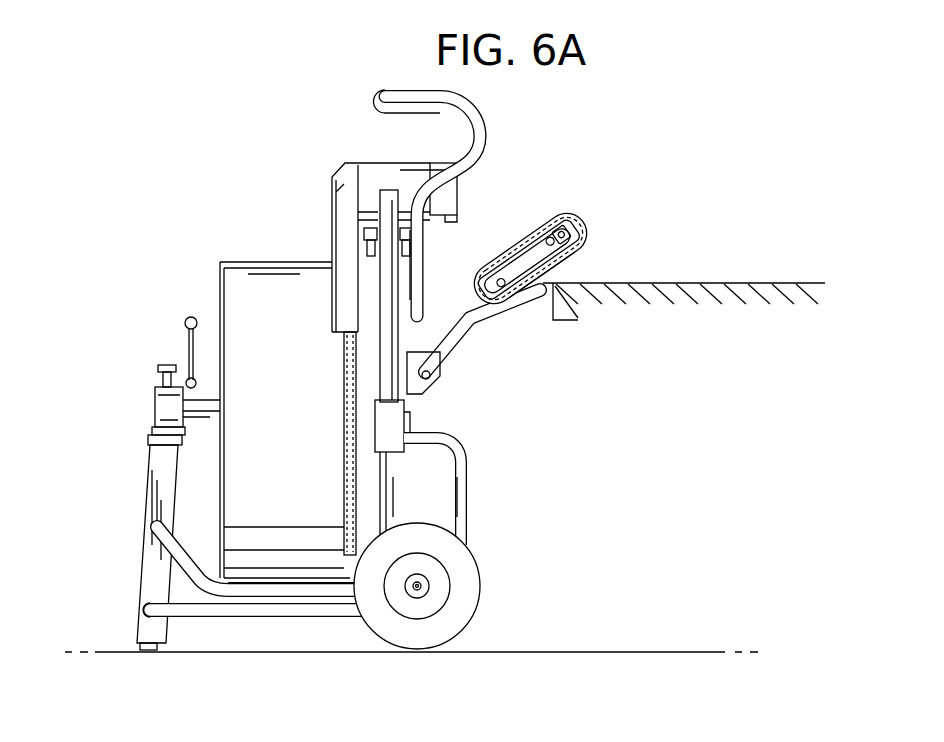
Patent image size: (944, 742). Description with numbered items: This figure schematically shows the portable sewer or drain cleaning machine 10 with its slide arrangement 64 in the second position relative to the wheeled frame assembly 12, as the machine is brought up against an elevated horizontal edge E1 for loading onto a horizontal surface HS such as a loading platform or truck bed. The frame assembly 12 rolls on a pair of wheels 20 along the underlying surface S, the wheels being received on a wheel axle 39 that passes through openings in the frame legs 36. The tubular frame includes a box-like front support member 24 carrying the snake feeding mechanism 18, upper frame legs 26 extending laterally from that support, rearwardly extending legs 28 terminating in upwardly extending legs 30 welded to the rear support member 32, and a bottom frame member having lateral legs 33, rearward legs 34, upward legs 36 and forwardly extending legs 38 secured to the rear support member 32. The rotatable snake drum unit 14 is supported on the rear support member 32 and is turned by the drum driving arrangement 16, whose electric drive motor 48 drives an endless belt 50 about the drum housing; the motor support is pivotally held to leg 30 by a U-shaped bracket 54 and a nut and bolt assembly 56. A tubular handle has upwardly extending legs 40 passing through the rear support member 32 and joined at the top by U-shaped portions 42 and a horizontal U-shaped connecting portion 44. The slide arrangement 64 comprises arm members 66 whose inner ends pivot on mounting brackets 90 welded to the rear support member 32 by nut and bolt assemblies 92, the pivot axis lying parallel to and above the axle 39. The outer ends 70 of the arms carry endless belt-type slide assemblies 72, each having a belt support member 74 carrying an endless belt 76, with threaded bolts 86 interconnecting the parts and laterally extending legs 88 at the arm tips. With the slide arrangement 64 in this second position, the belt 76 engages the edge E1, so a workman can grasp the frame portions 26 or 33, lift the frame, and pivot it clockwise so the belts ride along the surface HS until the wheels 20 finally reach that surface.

The portable sewer or drain cleaning machine 10 is at (193, 198).
The wheeled frame assembly 12 is at (131, 550).
The rotatable snake drum unit 14 is at (253, 262).
The drum driving arrangement 16 is at (347, 158).
The snake feeding mechanism 18 is at (158, 398).
The wheels 20 is at (468, 598).
The front support member 24 is at (157, 467).
The legs of upper frame member 26 is at (153, 521).
The rearwardly extending legs 28 is at (250, 586).
The upwardly extending legs 30 is at (387, 192).
The rear support member 32 is at (400, 446).
The legs of bottom frame member 33 is at (146, 608).
The rearwardly extending bottom legs 34 is at (278, 608).
The upwardly extending bottom frame legs 36 is at (456, 510).
The forwardly extending legs 38 is at (406, 418).
The wheel axle 39 is at (416, 590).
The handle legs 40 is at (427, 267).
The U-shaped handle portions 42 is at (478, 130).
The horizontal U-shaped connecting portion 44 is at (382, 92).
The electric drive motor 48 is at (448, 197).
The endless belt 50 is at (343, 362).
The U-shaped bracket 54 is at (377, 266).
The nut and bolt assembly 56 is at (376, 250).
The slide arrangement 64 is at (614, 210).
The arm members 66 is at (454, 346).
The outer ends of arm members 70 is at (545, 240).
The endless belt-type slide assemblies 72 is at (604, 240).
The belt support members 74 is at (521, 306).
The endless belts 76 is at (512, 312).
The threaded bolts 86 is at (566, 230).
The laterally outwardly extending legs 88 is at (606, 216).
The mounting brackets 90 is at (443, 385).
The nut and bolt assemblies 92 is at (405, 372).
The horizontal surface HS is at (745, 283).
The elevated horizontal edge E1 is at (558, 286).
The underlying surface S is at (592, 650).